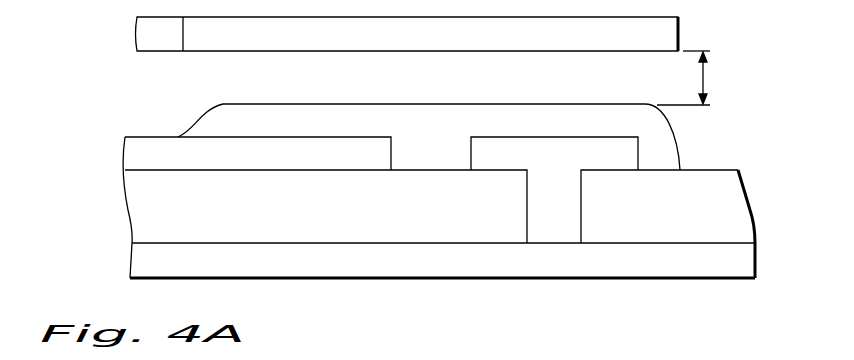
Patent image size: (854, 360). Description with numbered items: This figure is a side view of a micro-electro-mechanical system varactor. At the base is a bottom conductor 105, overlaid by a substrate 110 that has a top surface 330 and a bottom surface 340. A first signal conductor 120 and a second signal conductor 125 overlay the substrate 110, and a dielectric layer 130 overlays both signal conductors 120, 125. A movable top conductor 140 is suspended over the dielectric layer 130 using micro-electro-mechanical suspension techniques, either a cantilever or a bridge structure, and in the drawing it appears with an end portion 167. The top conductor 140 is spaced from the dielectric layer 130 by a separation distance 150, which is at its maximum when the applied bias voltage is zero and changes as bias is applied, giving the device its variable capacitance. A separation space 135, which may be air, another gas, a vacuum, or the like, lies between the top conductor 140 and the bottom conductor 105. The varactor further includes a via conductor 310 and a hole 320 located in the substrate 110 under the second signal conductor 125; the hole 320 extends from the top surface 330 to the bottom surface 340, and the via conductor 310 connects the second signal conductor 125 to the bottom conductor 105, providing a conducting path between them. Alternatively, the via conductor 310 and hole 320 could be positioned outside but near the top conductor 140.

The bottom conductor 105 is at (683, 263).
The substrate 110 is at (142, 210).
The first signal conductor 120 is at (253, 158).
The second signal conductor 125 is at (502, 160).
The dielectric layer 130 is at (418, 145).
The separation space 135 is at (157, 88).
The top conductor 140 is at (658, 32).
The separation distance 150 is at (705, 81).
The cover plate portion 167 is at (140, 32).
The via conductor 310 is at (547, 225).
The hole 320 is at (581, 205).
The top surface 330 is at (710, 170).
The bottom surface 340 is at (730, 244).